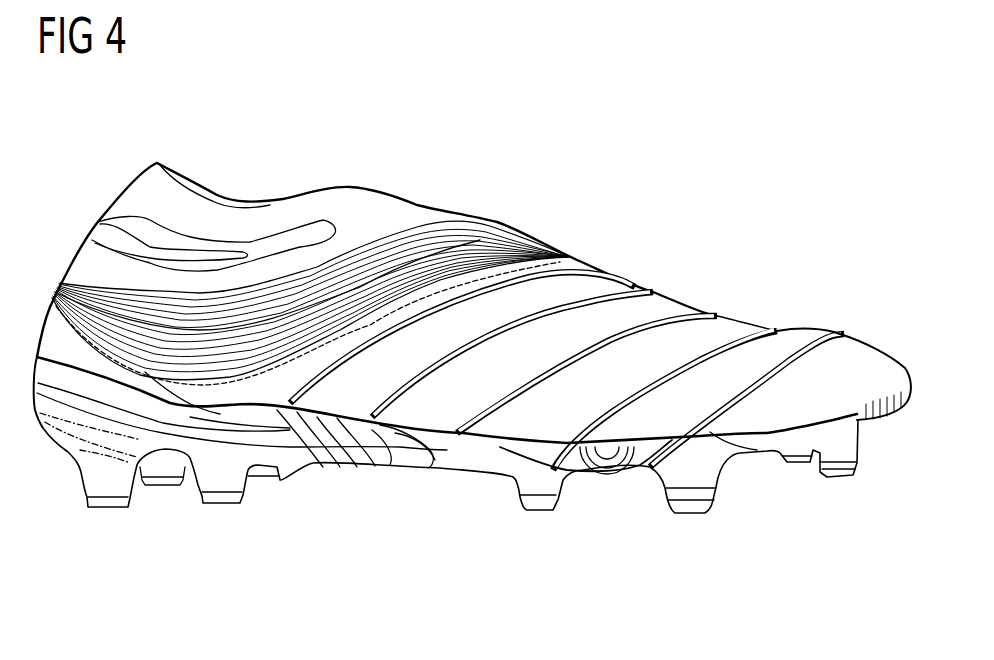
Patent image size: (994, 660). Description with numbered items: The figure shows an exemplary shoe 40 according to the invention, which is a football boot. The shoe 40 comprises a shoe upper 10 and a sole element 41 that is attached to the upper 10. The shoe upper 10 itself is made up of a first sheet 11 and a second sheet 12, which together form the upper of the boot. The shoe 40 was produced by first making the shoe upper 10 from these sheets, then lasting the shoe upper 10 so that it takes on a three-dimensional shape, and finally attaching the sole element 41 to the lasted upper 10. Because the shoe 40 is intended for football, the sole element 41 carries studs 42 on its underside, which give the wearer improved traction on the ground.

The shoe upper 10 is at (577, 247).
The first sheet 11 is at (870, 360).
The second sheet 12 is at (178, 258).
The shoe 40 is at (115, 153).
The sole element 41 is at (482, 465).
The studs 42 is at (263, 480).